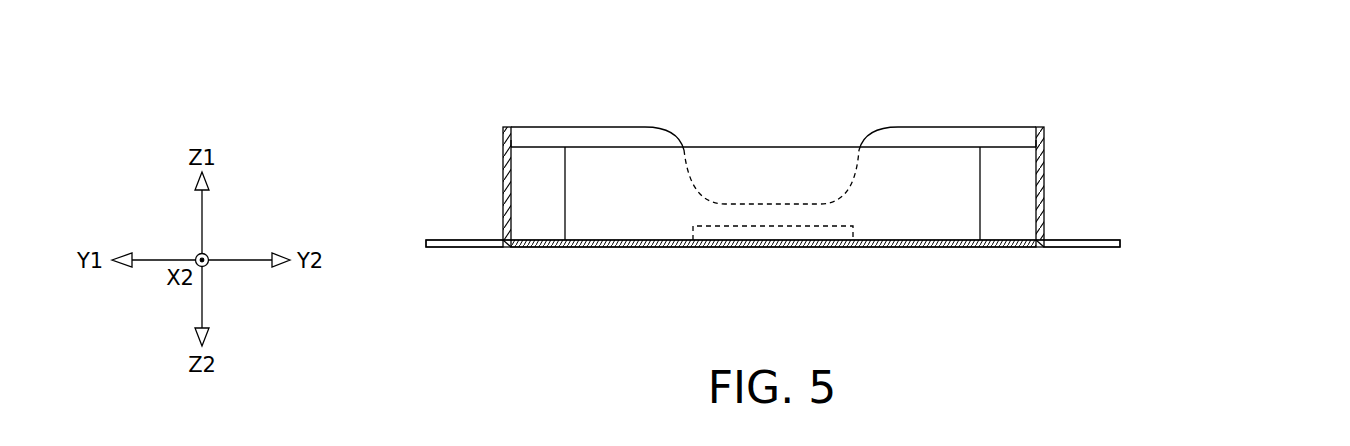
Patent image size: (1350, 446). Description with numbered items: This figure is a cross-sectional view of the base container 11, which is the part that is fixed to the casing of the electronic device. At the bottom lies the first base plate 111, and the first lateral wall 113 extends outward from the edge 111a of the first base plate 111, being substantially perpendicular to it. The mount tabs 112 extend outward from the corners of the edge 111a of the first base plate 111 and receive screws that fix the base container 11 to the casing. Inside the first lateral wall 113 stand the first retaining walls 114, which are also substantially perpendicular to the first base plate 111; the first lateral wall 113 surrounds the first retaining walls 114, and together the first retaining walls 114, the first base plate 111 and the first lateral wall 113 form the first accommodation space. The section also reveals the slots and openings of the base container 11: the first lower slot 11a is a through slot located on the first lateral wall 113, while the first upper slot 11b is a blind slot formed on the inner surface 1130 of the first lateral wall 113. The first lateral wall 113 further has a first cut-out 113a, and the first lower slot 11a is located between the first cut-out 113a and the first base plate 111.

The base container 11 is at (1307, 82).
The first lower slot 11a is at (847, 225).
The first upper slot 11b is at (514, 143).
The first base plate 111 is at (885, 247).
The edge of the first base plate 111a is at (501, 250).
The mount tab 112 is at (446, 242).
The first lateral wall 113 is at (610, 138).
The first cut-out 113a is at (778, 185).
The inner surface of the first lateral wall 1130 is at (515, 205).
The first retaining wall 114 is at (645, 199).